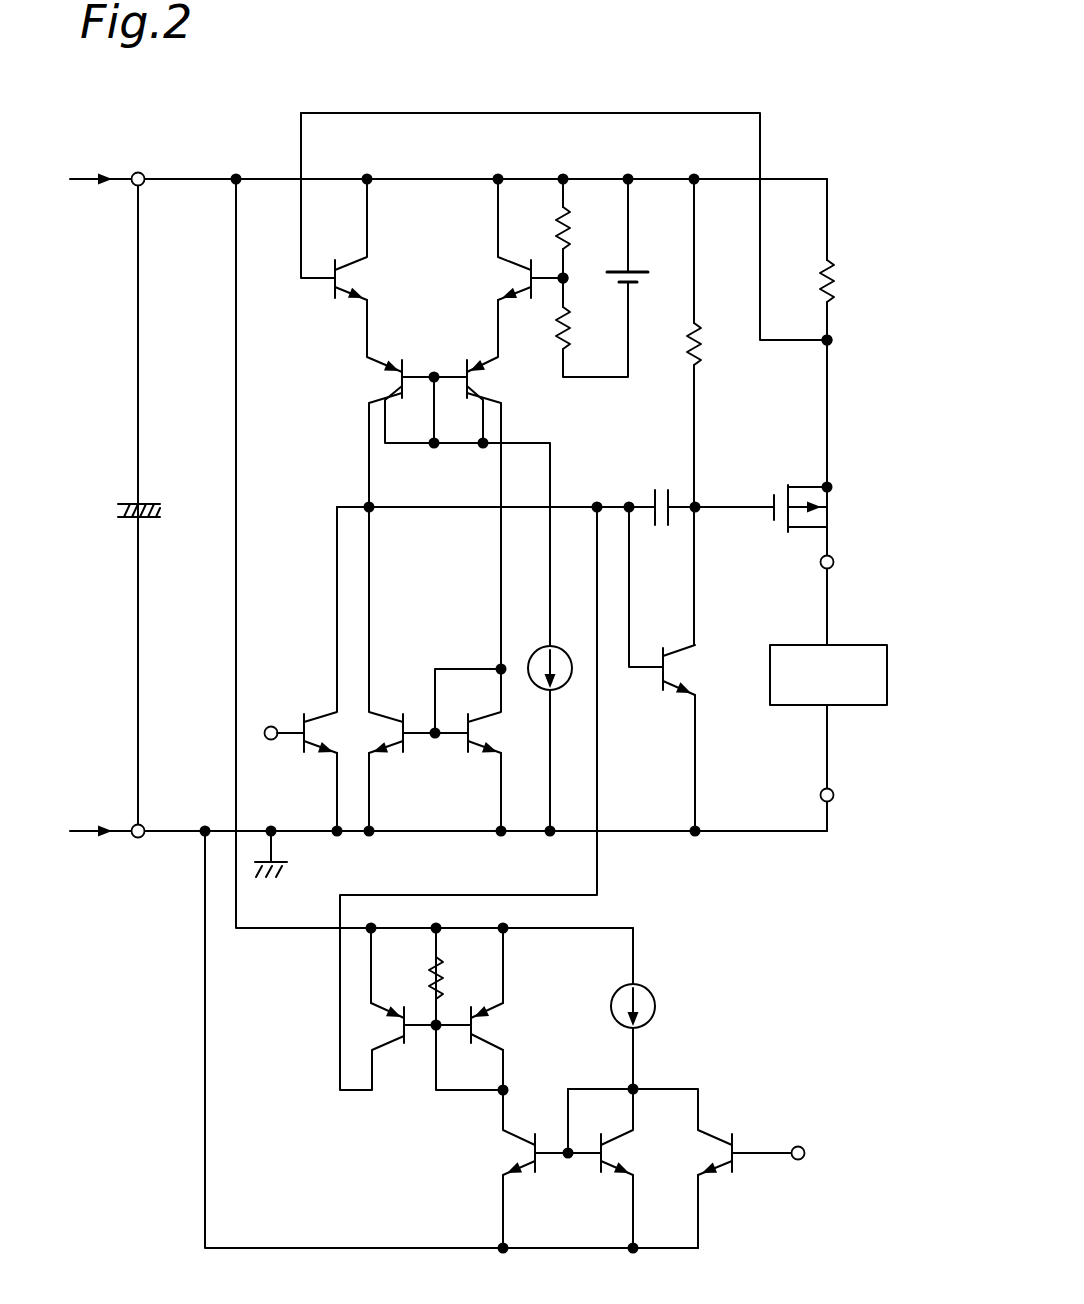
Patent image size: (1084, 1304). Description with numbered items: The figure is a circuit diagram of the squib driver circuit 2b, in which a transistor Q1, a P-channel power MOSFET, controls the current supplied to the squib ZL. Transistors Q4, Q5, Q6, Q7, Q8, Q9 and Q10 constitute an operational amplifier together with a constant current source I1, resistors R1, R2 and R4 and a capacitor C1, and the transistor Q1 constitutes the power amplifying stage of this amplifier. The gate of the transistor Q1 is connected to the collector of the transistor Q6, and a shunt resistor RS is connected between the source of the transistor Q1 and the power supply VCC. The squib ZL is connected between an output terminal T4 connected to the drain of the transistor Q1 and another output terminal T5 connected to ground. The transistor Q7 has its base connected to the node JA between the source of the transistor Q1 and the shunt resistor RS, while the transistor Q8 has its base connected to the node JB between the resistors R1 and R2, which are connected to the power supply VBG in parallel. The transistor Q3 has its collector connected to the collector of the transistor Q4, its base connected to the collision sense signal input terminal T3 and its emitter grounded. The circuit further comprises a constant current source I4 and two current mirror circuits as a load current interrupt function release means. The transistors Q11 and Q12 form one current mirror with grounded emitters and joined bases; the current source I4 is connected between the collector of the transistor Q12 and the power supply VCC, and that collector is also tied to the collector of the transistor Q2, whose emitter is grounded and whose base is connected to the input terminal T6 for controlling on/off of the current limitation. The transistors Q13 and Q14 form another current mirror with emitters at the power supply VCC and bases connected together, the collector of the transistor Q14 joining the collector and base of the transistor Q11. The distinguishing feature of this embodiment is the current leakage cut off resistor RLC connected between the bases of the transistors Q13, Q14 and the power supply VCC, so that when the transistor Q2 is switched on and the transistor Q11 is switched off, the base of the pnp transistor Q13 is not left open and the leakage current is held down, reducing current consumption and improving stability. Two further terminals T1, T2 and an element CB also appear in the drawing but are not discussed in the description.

The power supply terminal T1 is at (137, 186).
The ground terminal T2 is at (136, 840).
The collision sense signal input terminal T3 is at (268, 726).
The output terminal T4 is at (820, 562).
The output terminal T5 is at (820, 795).
The input terminal T6 is at (798, 1146).
The power supply VCC is at (191, 149).
The power supply VBG is at (638, 213).
The backup capacitor CB is at (120, 503).
The capacitor C1 is at (662, 486).
The P-channel power MOSFET Q1 is at (786, 484).
The transistor Q2 is at (741, 1166).
The transistor Q3 is at (303, 750).
The transistor Q4 is at (411, 752).
The transistor Q5 is at (461, 750).
The transistor Q6 is at (662, 694).
The transistor Q7 is at (327, 294).
The transistor Q8 is at (542, 293).
The transistor Q9 is at (408, 358).
The transistor Q10 is at (463, 358).
The transistor Q11 is at (537, 1139).
The transistor Q12 is at (596, 1161).
The pnp transistor Q13 is at (404, 1044).
The transistor Q14 is at (470, 1031).
The resistor R1 is at (556, 228).
The resistor R2 is at (572, 326).
The resistor R4 is at (702, 348).
The shunt resistor RS is at (818, 276).
The current leakage cut off resistor RLC is at (447, 976).
The node JA is at (824, 342).
The node JB is at (568, 278).
The constant current source I1 is at (574, 646).
The constant current source I4 is at (656, 1006).
The squib ZL is at (888, 678).
The squib driver circuit 2b is at (800, 938).